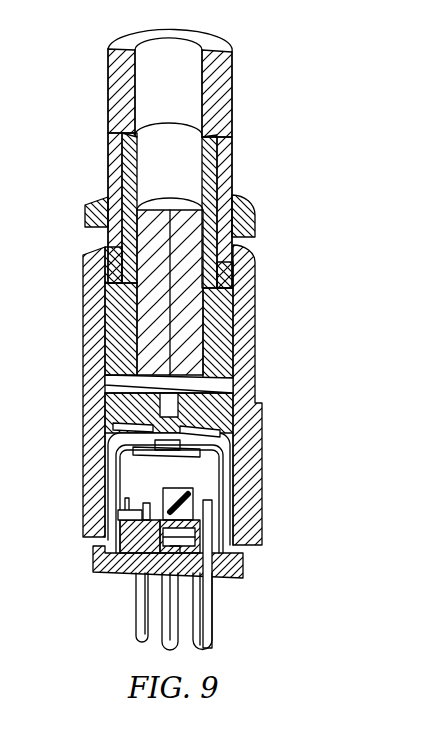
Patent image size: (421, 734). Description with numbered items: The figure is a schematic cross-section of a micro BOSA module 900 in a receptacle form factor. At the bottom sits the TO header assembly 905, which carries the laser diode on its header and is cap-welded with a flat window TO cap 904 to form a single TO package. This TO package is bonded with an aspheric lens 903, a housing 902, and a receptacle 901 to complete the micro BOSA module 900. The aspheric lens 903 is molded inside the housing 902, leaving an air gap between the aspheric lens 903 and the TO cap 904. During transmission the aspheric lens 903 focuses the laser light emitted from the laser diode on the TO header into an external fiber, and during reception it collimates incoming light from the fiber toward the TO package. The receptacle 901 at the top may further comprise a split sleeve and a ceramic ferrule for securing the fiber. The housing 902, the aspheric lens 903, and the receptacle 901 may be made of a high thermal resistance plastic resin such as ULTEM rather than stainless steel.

The micro BOSA module 900 is at (184, 339).
The receptacle 901 is at (97, 198).
The housing 902 is at (83, 322).
The aspheric lens 903 is at (150, 428).
The flat window TO cap 904 is at (214, 433).
The TO header assembly 905 is at (245, 574).